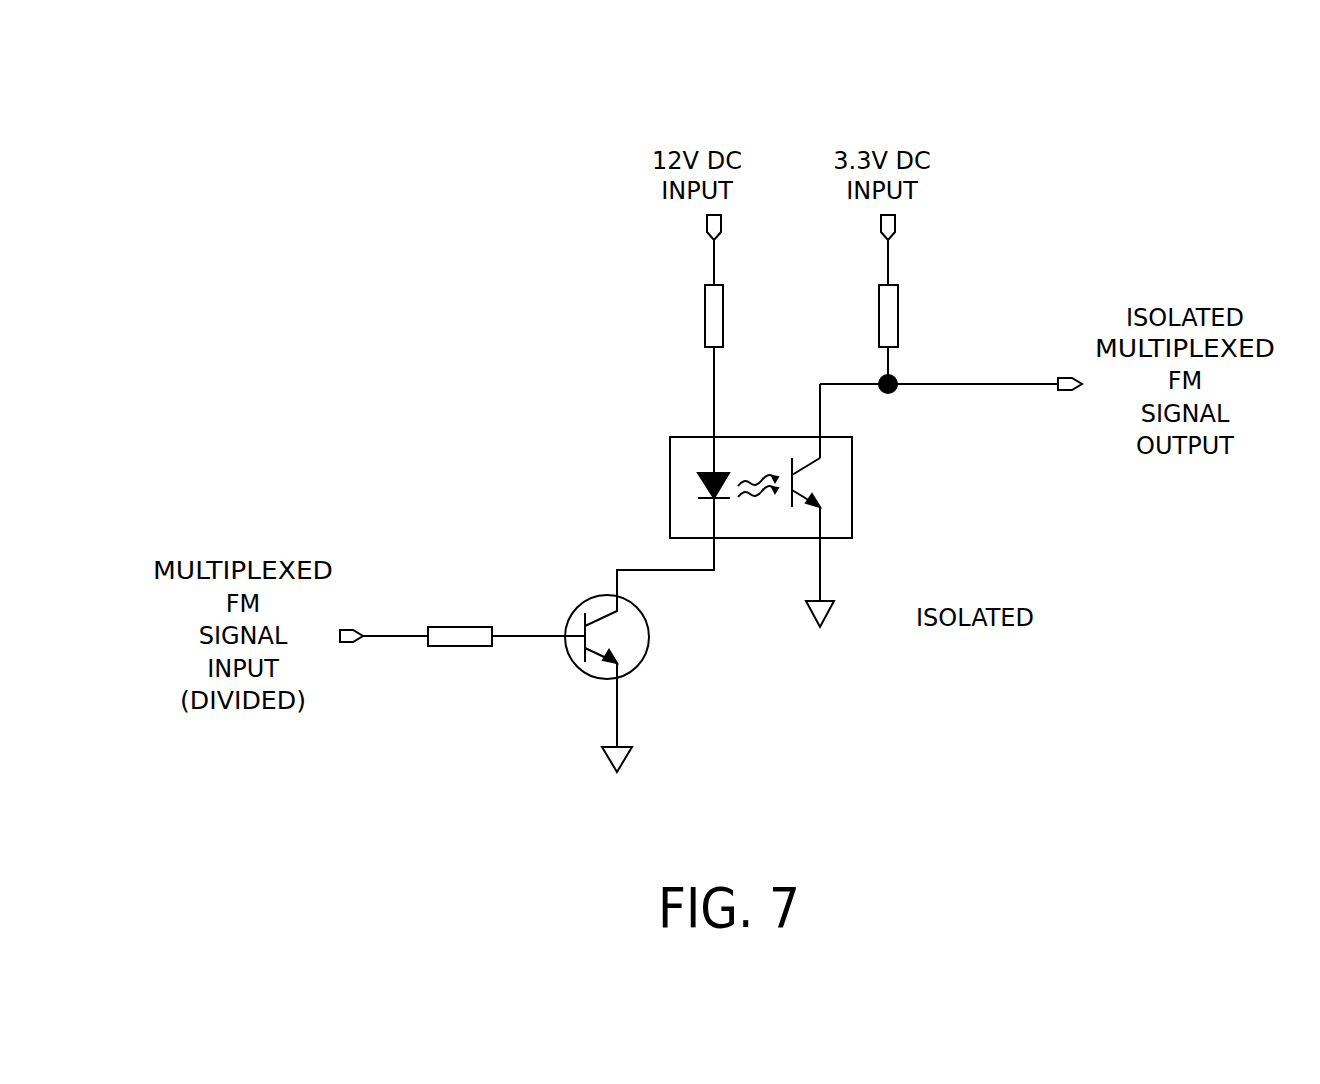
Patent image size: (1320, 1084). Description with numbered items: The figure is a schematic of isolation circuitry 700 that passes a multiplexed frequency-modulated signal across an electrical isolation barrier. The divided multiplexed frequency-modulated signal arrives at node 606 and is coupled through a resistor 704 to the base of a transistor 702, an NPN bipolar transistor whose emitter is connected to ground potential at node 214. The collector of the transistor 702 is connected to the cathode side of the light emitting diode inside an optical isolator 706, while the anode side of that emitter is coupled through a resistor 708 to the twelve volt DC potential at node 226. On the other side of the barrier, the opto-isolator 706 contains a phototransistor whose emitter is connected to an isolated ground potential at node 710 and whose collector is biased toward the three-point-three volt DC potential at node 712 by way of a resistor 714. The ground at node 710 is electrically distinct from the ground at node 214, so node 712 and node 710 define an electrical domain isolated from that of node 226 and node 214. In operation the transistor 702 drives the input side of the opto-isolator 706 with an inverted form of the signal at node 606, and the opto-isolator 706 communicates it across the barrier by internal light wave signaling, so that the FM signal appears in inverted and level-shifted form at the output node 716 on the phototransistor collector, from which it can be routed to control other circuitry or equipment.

The isolation circuitry 700 is at (1122, 92).
The node 226 is at (722, 221).
The node 712 is at (896, 221).
The resistor 708 is at (724, 298).
The resistor 714 is at (899, 298).
The node 716 is at (1070, 392).
The optical isolator 706 is at (853, 458).
The node 710 is at (806, 614).
The node 606 is at (349, 644).
The resistor 704 is at (477, 625).
The transistor 702 is at (649, 657).
The node 214 is at (600, 757).